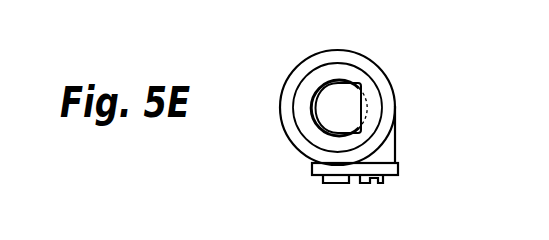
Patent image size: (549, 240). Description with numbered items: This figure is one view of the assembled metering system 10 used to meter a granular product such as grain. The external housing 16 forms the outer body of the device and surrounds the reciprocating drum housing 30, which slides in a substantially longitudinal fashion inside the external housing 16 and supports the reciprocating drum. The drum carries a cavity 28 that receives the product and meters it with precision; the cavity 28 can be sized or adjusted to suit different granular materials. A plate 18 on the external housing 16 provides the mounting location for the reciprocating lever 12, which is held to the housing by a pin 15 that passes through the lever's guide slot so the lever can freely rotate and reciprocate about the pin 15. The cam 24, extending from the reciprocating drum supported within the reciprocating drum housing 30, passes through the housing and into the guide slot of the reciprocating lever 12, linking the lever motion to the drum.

The metering system 10 is at (264, 75).
The external housing 16 is at (302, 63).
The reciprocating drum housing 30 is at (304, 141).
The cavity 28 is at (341, 96).
The plate 18 is at (396, 145).
The reciprocating lever 12 is at (400, 167).
The cam 24 is at (329, 185).
The pin 15 is at (378, 185).